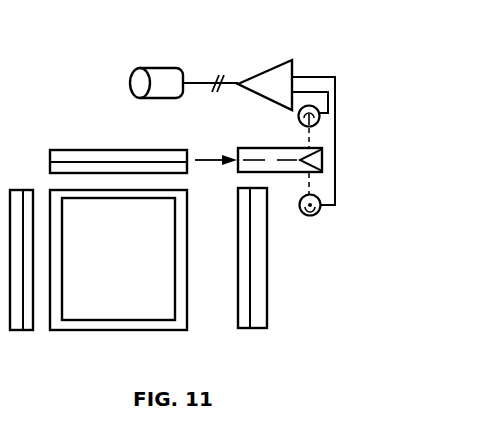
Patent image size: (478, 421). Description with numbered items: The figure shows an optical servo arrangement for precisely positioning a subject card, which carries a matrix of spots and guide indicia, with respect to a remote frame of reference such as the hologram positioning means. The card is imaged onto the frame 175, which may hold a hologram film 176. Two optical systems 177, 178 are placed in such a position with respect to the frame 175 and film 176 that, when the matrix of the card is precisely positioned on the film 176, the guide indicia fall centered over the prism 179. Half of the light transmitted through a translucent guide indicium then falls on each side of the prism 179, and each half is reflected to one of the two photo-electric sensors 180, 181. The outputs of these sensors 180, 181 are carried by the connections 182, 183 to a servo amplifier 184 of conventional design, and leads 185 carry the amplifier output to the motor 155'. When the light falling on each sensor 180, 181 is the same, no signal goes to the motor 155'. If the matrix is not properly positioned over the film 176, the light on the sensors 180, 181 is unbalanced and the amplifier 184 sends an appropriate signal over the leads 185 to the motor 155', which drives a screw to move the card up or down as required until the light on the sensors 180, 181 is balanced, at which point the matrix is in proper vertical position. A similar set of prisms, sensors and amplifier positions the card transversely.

The motor 155' is at (156, 60).
The leads 185 is at (230, 83).
The servo amplifier 184 is at (257, 75).
The lead 183 is at (302, 77).
The lead 182 is at (308, 92).
The photo-electric sensor 180 is at (298, 119).
The photo-electric sensor 181 is at (317, 215).
The prism 179 is at (322, 160).
The optical system 177 is at (67, 148).
The frame 175 is at (157, 330).
The hologram film 176 is at (137, 271).
The optical system 178 is at (30, 330).